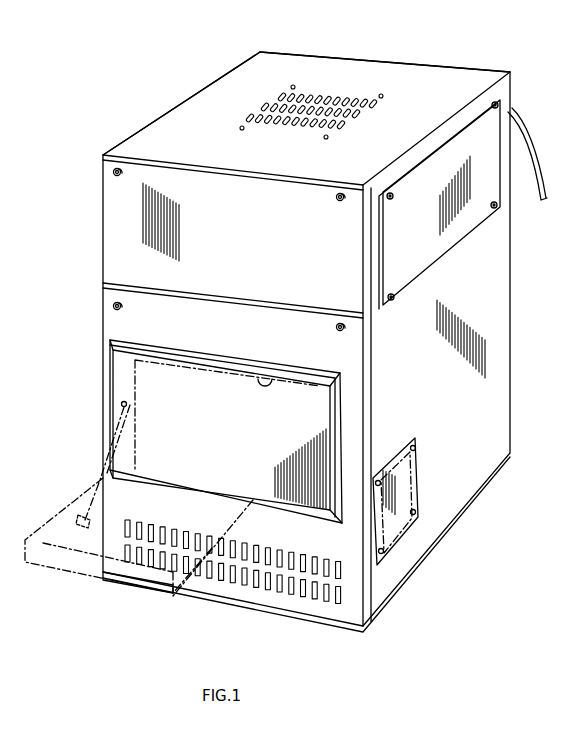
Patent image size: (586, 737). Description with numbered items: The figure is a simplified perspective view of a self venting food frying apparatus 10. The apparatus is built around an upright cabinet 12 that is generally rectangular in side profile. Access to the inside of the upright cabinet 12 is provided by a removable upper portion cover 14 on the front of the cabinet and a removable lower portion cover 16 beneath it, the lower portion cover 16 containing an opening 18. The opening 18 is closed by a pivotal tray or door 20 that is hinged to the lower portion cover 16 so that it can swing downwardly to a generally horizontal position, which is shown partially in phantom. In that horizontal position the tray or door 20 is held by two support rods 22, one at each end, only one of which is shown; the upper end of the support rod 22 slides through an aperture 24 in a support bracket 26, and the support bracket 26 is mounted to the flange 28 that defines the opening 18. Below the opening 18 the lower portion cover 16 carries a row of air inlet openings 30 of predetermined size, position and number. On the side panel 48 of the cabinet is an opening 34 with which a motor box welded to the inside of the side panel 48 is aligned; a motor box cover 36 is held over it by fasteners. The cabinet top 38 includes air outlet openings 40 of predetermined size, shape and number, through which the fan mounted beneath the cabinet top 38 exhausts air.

The self venting food frying apparatus 10 is at (500, 245).
The upright cabinet 12 is at (415, 72).
The removable upper portion cover 14 is at (110, 222).
The removable lower portion cover 16 is at (113, 327).
The opening 18 is at (265, 378).
The pivotal tray or door 20 is at (313, 408).
The support rod 22 is at (113, 443).
The aperture 24 is at (123, 403).
The support bracket 26 is at (130, 405).
The flange 28 is at (108, 373).
The air inlet openings 30 is at (318, 597).
The opening 34 is at (413, 500).
The motor box cover 36 is at (420, 483).
The cabinet top 38 is at (228, 84).
The air outlet openings 40 is at (355, 100).
The side panel 48 is at (439, 264).